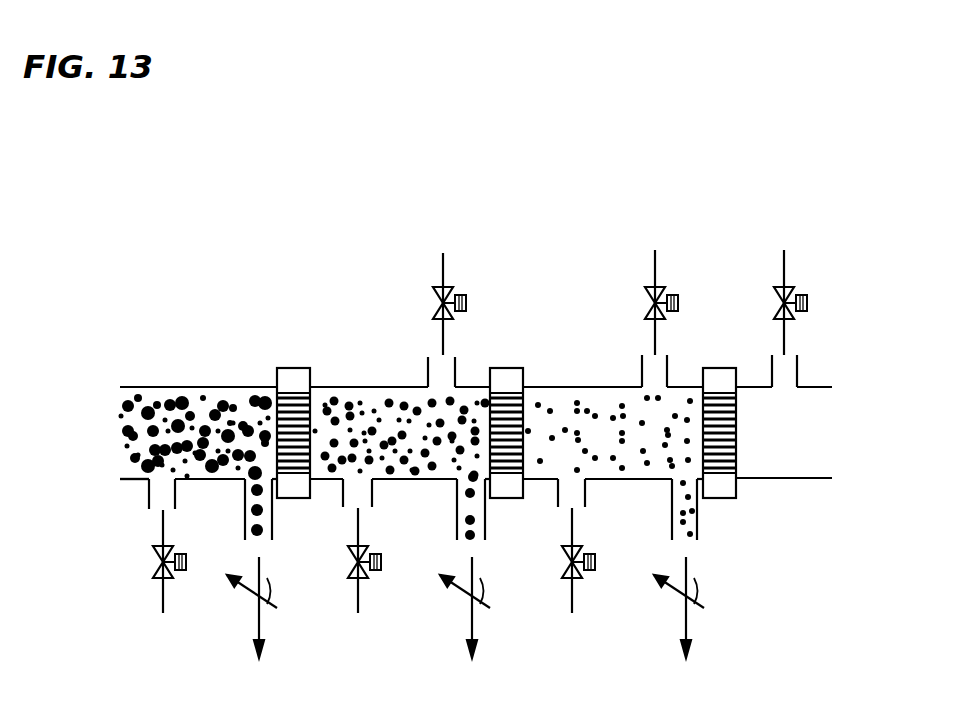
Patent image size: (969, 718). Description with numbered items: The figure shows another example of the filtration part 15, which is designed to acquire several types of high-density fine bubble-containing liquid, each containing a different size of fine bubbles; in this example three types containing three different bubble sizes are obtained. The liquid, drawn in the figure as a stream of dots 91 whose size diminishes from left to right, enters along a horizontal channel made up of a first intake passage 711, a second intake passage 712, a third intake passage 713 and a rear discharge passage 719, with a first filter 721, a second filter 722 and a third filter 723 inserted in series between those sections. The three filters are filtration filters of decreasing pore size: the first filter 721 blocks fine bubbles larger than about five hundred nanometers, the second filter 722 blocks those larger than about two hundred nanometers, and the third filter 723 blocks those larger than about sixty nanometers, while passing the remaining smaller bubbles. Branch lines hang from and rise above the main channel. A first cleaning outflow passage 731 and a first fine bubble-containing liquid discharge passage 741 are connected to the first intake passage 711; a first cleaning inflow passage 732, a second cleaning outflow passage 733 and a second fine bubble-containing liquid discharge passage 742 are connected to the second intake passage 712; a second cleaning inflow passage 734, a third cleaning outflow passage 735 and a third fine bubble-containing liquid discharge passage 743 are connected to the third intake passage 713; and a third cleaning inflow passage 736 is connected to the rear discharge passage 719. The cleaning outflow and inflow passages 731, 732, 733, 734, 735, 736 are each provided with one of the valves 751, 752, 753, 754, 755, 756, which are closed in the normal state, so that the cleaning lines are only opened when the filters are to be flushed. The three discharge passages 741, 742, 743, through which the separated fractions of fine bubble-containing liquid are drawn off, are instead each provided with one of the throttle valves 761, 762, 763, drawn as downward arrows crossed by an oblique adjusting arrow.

The filtration part 15 is at (215, 216).
The two-phase refrigerant with liquid droplets 91 is at (170, 392).
The first intake passage 711 is at (242, 385).
The second intake passage 712 is at (375, 385).
The third intake passage 713 is at (587, 385).
The rear discharge passage 719 is at (790, 480).
The first filter 721 is at (293, 368).
The second filter 722 is at (512, 366).
The third filter 723 is at (720, 365).
The first cleaning outflow passage 731 is at (148, 497).
The first cleaning inflow passage 732 is at (427, 367).
The second cleaning outflow passage 733 is at (343, 497).
The second cleaning inflow passage 734 is at (638, 365).
The third cleaning outflow passage 735 is at (557, 497).
The third cleaning inflow passage 736 is at (797, 363).
The first fine bubble-containing liquid discharge passage 741 is at (247, 520).
The second fine bubble-containing liquid discharge passage 742 is at (457, 520).
The third fine bubble-containing liquid discharge passage 743 is at (672, 520).
The valve 751 is at (155, 577).
The valve 752 is at (450, 288).
The valve 753 is at (350, 577).
The valve 754 is at (665, 287).
The valve 755 is at (562, 577).
The valve 756 is at (777, 288).
The throttle valve 761 is at (253, 600).
The throttle valve 762 is at (467, 600).
The throttle valve 763 is at (680, 600).